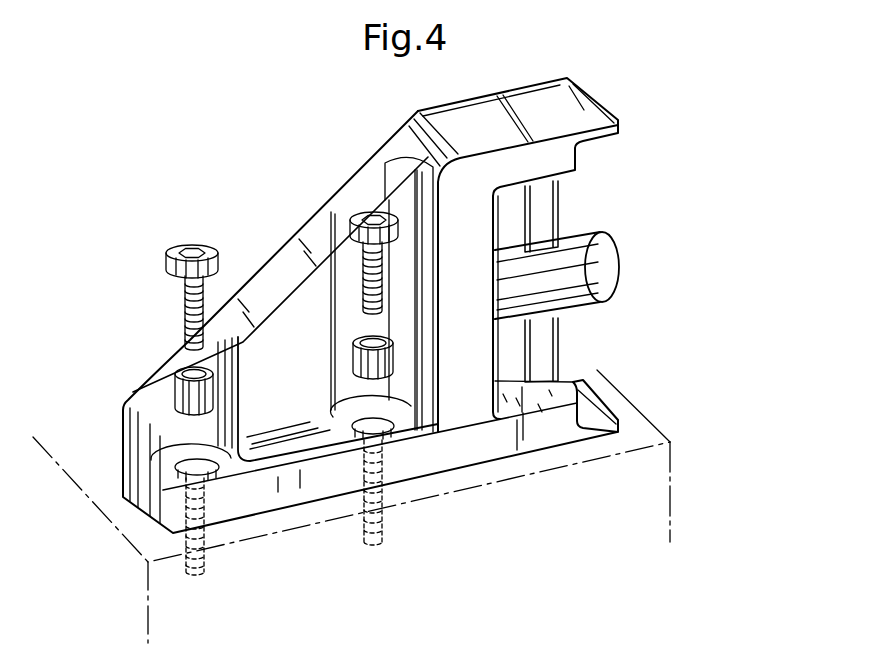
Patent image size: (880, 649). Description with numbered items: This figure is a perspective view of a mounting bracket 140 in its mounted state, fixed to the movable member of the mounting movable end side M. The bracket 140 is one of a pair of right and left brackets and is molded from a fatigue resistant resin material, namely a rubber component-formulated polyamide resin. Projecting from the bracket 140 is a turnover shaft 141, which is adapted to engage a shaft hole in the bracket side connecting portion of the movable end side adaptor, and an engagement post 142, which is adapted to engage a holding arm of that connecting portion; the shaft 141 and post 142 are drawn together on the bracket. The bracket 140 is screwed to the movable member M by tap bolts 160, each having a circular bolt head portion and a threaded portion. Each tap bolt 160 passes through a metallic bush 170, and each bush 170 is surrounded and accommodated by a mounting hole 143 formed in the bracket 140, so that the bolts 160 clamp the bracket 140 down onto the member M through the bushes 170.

The mounting bracket 140 is at (708, 160).
The turnover shaft 141 is at (604, 267).
The engagement post 142 is at (547, 212).
The mounting hole 143 is at (383, 428).
The tap bolt 160 is at (160, 260).
The metallic bush 170 is at (163, 386).
The mounting movable end side M is at (565, 534).